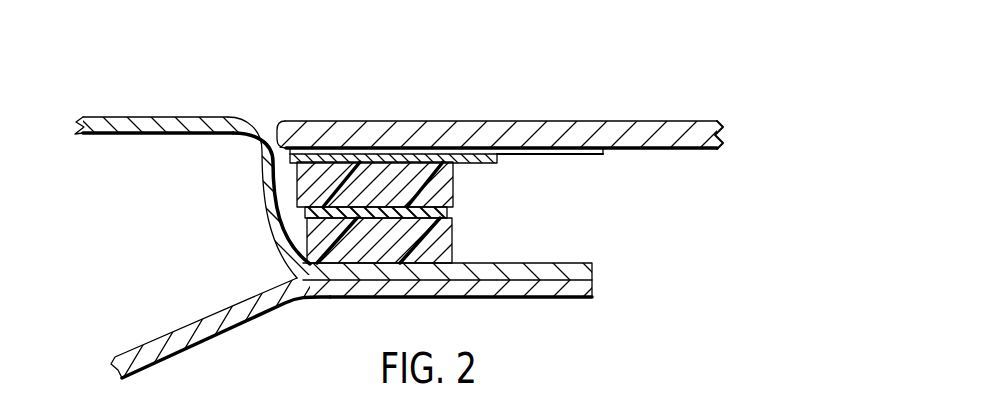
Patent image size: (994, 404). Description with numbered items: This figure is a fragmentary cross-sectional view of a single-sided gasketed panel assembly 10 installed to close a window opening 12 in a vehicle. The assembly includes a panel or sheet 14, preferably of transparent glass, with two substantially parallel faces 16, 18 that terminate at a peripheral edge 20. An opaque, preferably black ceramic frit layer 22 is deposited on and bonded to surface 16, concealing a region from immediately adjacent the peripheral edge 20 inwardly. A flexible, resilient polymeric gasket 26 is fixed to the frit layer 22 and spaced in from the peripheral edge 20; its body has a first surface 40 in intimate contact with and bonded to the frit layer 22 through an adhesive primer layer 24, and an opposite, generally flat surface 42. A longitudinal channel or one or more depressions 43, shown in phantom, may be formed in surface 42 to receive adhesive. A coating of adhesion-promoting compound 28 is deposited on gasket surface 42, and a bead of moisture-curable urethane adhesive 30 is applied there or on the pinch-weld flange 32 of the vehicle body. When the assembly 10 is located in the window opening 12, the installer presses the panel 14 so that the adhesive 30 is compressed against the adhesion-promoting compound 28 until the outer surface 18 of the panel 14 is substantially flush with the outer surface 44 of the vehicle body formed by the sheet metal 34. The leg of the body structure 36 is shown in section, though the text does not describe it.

The single-sided gasketed panel assembly 10 is at (738, 63).
The window opening 12 is at (262, 171).
The panel or sheet 14 is at (710, 116).
The surface of panel 16 is at (690, 153).
The outer surface of panel 18 is at (643, 121).
The peripheral edge 20 is at (277, 130).
The frit layer 22 is at (572, 156).
The adhesive primer layer 24 is at (490, 163).
The gasket 26 is at (453, 202).
The adhesion-promoting compound 28 is at (447, 155).
The bead of adhesive 30 is at (433, 246).
The pinch-weld flange 32 is at (580, 258).
The sheet metal 34 is at (178, 136).
The lower leg of housing 36 is at (198, 330).
The first surface of gasket 40 is at (337, 182).
The opposite surface of gasket 42 is at (370, 210).
The depressions 43 is at (423, 187).
The outer surface of vehicle body 44 is at (177, 133).